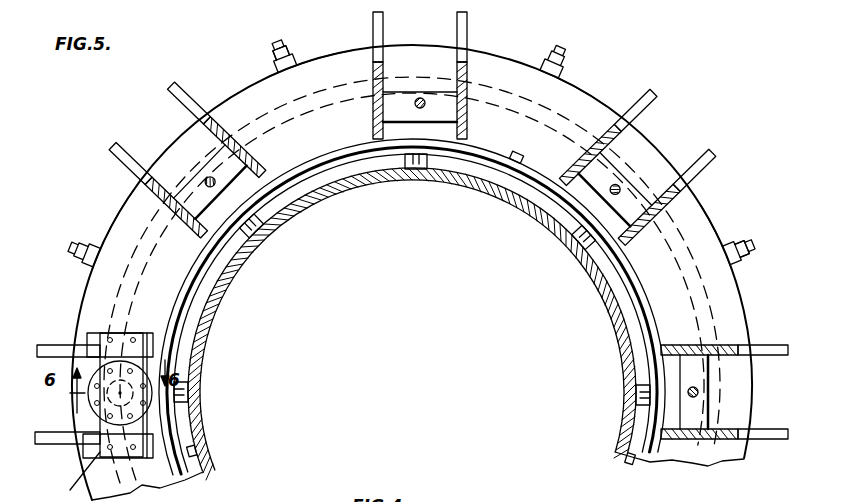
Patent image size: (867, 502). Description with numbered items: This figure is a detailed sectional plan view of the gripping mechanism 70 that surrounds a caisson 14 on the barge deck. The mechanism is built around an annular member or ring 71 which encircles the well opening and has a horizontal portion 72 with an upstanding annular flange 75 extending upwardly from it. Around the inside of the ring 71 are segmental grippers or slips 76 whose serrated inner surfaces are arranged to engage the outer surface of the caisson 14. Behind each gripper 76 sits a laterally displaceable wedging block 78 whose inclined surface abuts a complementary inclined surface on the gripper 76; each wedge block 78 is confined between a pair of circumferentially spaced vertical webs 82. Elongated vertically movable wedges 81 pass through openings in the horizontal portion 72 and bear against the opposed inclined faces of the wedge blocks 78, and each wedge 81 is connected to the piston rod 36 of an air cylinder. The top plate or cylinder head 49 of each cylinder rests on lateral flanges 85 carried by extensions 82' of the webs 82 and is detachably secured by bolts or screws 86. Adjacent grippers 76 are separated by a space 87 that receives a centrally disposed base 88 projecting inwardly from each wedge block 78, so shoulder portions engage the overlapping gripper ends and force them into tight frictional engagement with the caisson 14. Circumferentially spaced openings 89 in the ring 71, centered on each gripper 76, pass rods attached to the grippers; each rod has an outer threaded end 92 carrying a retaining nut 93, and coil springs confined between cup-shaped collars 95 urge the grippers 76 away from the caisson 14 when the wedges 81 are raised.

The caisson 14 is at (358, 180).
The piston rod 36 is at (419, 100).
The top plate or cylinder head 49 is at (72, 477).
The gripping mechanism 70 is at (605, 102).
The annular member or ring 71 is at (718, 228).
The horizontal portion 72 is at (577, 94).
The upstanding annular flange 75 is at (140, 225).
The segmental grippers or slips 76 is at (315, 167).
The wedging block 78 is at (582, 228).
The elongated vertically movable wedge 81 is at (233, 167).
The vertical webs 82 is at (404, 225).
The extensions of the vertical webs 82' is at (412, 280).
The lateral flanges 85 is at (90, 338).
The bolts or screws 86 is at (133, 337).
The space 87 is at (420, 167).
The centrally disposed base 88 is at (416, 166).
The circumferentially spaced openings 89 is at (519, 160).
The outer threaded end 92 is at (285, 44).
The retaining nut 93 is at (296, 50).
The cup-shaped collars 95 is at (300, 60).